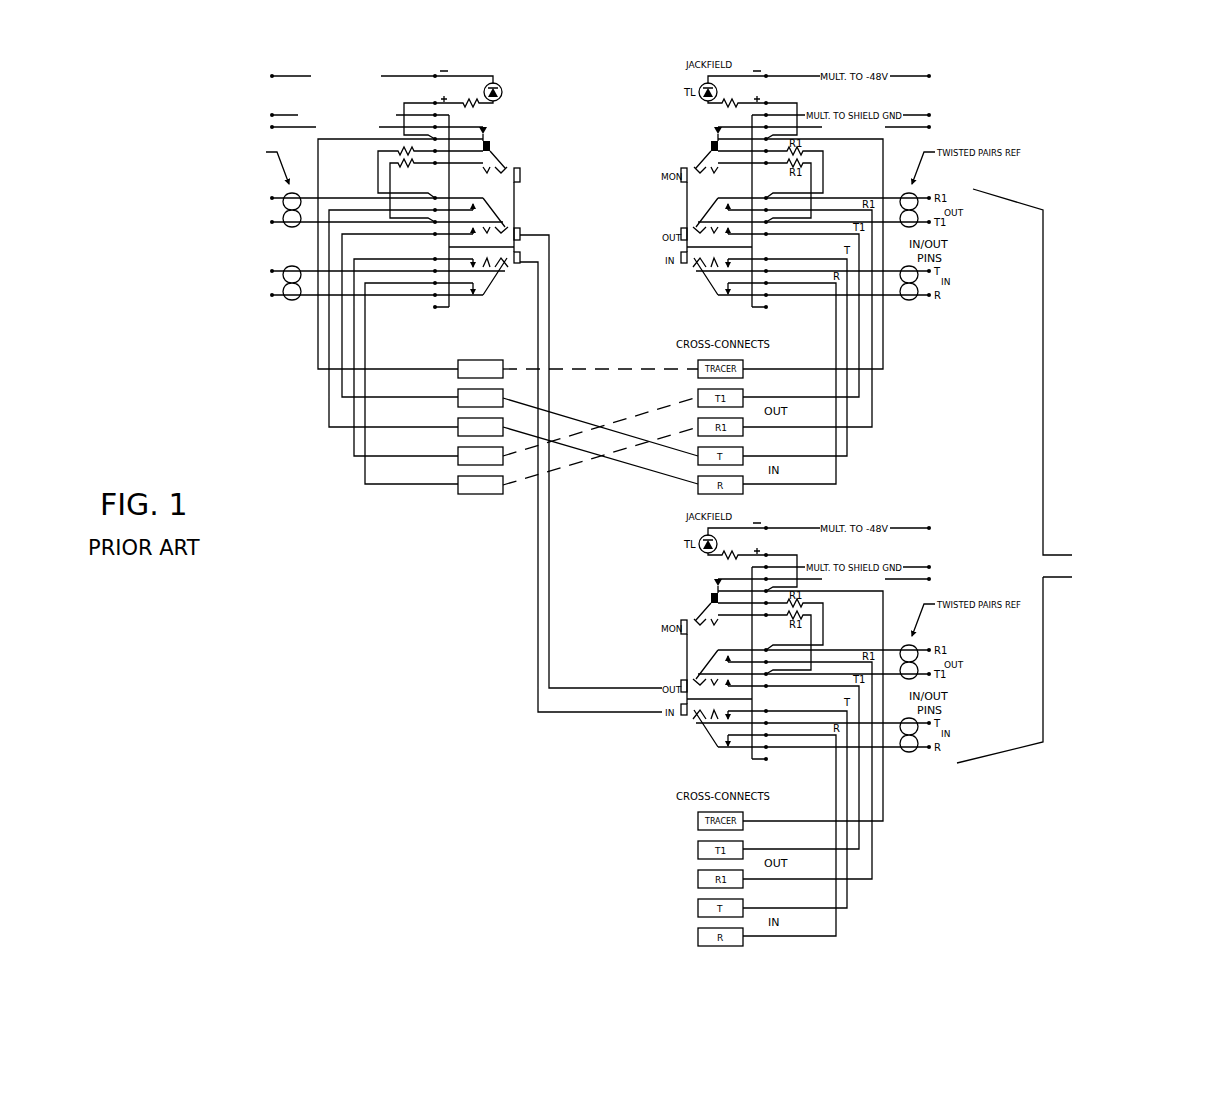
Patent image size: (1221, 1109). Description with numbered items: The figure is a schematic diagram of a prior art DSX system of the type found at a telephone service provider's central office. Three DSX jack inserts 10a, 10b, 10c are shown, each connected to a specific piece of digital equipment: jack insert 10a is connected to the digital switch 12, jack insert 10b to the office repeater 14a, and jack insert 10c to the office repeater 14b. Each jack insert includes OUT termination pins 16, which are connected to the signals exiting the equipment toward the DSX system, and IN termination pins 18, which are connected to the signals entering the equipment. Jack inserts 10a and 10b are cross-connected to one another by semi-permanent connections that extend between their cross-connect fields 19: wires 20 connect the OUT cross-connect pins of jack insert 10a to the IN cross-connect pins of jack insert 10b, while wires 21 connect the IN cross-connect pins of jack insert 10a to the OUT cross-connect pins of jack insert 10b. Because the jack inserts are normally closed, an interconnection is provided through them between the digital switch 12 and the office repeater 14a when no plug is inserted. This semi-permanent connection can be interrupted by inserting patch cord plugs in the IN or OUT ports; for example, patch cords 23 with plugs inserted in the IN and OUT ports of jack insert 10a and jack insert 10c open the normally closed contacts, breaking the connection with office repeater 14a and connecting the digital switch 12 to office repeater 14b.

The DSX jack insert 10a is at (215, 130).
The DSX jack insert 10b is at (990, 112).
The DSX jack insert 10c is at (625, 803).
The digital switch 12 is at (185, 262).
The office repeater 14a is at (1125, 205).
The office repeater 14b is at (1132, 748).
The OUT termination pins 16 is at (238, 212).
The IN termination pins 18 is at (245, 290).
The cross-connect fields 19 is at (435, 344).
The wires 20 is at (577, 420).
The wires 21 is at (640, 413).
The patch cords 23 is at (612, 688).